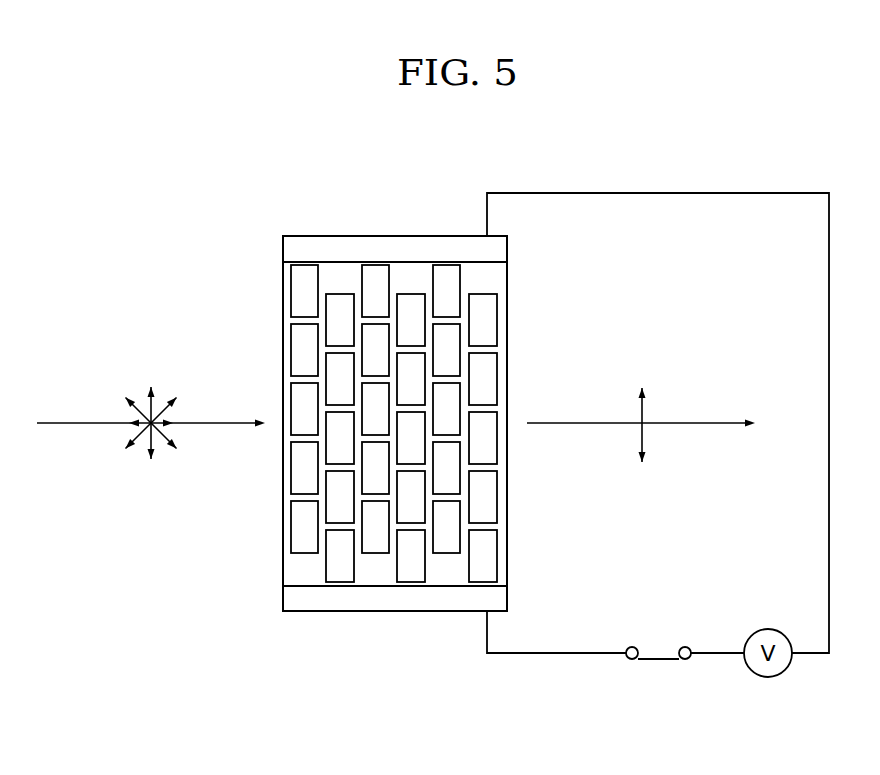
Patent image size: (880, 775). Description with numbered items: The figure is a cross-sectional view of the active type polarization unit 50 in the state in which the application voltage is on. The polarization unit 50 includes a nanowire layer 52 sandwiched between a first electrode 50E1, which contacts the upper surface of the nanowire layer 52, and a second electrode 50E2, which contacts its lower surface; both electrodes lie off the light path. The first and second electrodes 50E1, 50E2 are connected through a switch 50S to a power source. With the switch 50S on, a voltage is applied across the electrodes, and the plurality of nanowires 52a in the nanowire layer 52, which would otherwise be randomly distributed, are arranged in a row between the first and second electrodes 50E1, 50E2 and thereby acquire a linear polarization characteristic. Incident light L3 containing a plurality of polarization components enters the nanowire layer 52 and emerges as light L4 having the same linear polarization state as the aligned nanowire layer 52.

The polarization unit 50 is at (258, 252).
The first electrode 50E1 is at (373, 243).
The second electrode 50E2 is at (372, 603).
The nanowire layer 52 is at (283, 319).
The nanowire 52a is at (295, 521).
The incident light L3 is at (72, 423).
The light L4 is at (569, 423).
The switch 50S is at (653, 676).